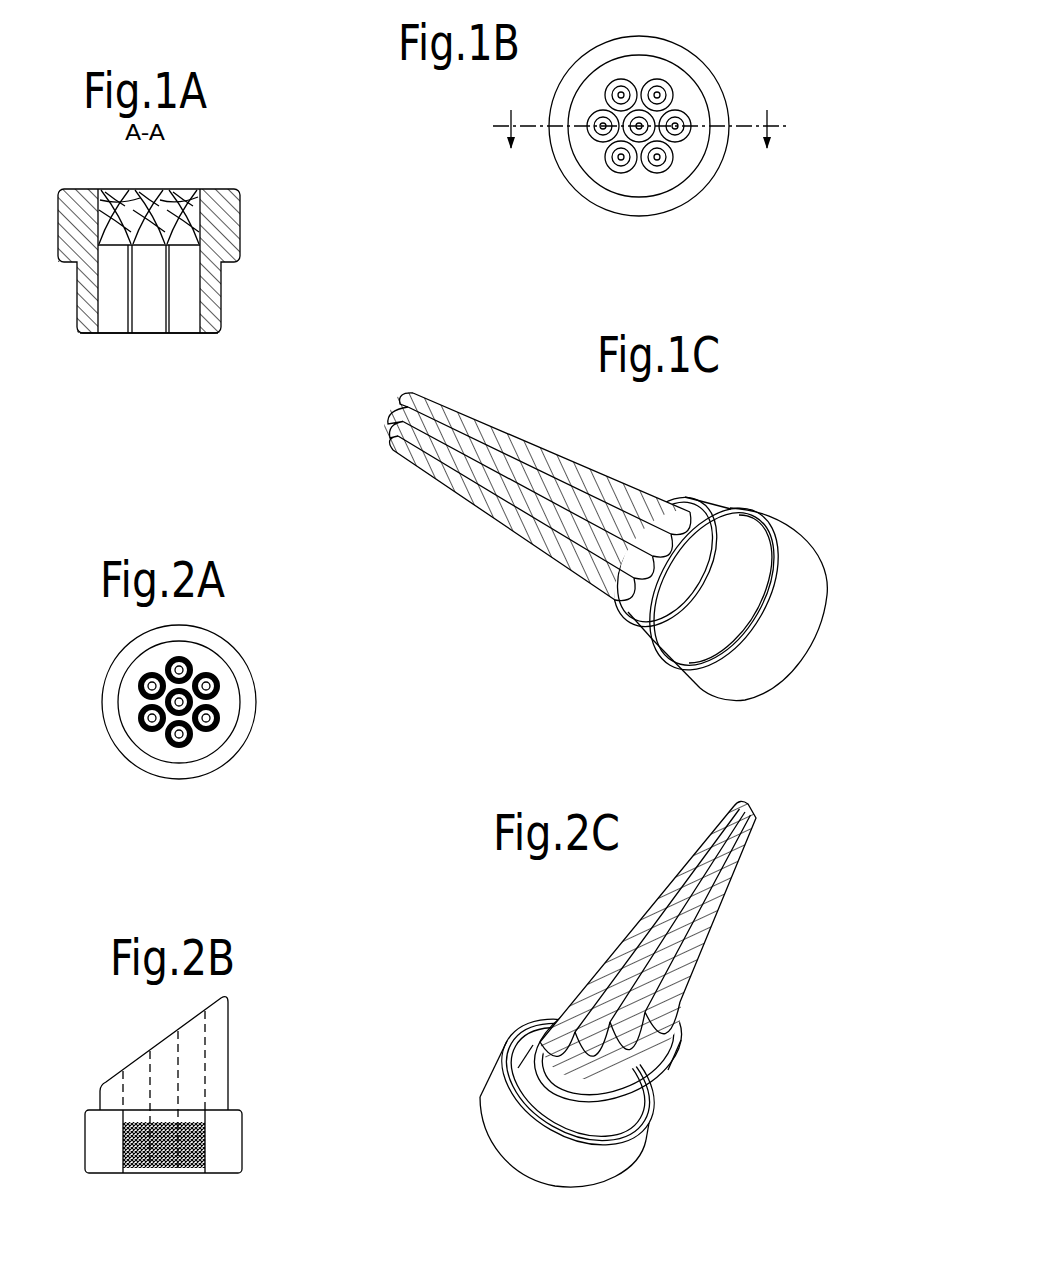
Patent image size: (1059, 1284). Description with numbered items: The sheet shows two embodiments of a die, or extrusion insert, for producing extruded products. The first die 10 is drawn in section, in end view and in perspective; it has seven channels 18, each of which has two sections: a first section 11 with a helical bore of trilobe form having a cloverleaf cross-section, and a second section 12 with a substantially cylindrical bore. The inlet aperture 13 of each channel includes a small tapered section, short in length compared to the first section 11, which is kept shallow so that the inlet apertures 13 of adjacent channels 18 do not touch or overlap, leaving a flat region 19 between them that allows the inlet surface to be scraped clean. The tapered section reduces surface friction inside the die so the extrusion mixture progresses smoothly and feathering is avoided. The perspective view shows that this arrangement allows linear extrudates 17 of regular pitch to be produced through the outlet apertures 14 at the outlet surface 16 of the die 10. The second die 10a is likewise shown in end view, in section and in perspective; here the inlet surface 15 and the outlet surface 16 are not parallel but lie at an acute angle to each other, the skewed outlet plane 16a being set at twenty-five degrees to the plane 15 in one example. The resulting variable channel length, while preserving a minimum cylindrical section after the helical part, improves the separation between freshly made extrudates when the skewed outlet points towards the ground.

In FIG. 1A, the die 10 is at (175, 262).
In FIG. 1B, the die 10 is at (640, 114).
In FIG. 2A, the die 10a is at (117, 647).
In FIG. 2B, the die 10a is at (181, 1122).
In FIG. 1A, the first section 11 is at (93, 229).
In FIG. 1A, the second section 12 is at (187, 287).
In FIG. 1A, the inlet aperture 13 is at (187, 190).
In FIG. 1A, the outlet aperture 14 is at (108, 342).
In FIG. 1C, the outlet aperture 14 is at (677, 490).
In FIG. 2C, the outlet aperture 14 is at (680, 1049).
In FIG. 2B, the inlet surface 15 is at (227, 1180).
In FIG. 1C, the outlet surface 16 is at (612, 607).
In FIG. 2B, the outlet surface 16 is at (116, 1067).
In FIG. 2C, the plane 16a is at (552, 1015).
In FIG. 1C, the linear extrudates 17 is at (530, 414).
In FIG. 2C, the linear extrudates 17 is at (700, 840).
In FIG. 1B, the channels 18 is at (612, 74).
In FIG. 1A, the flat region 19 is at (128, 190).